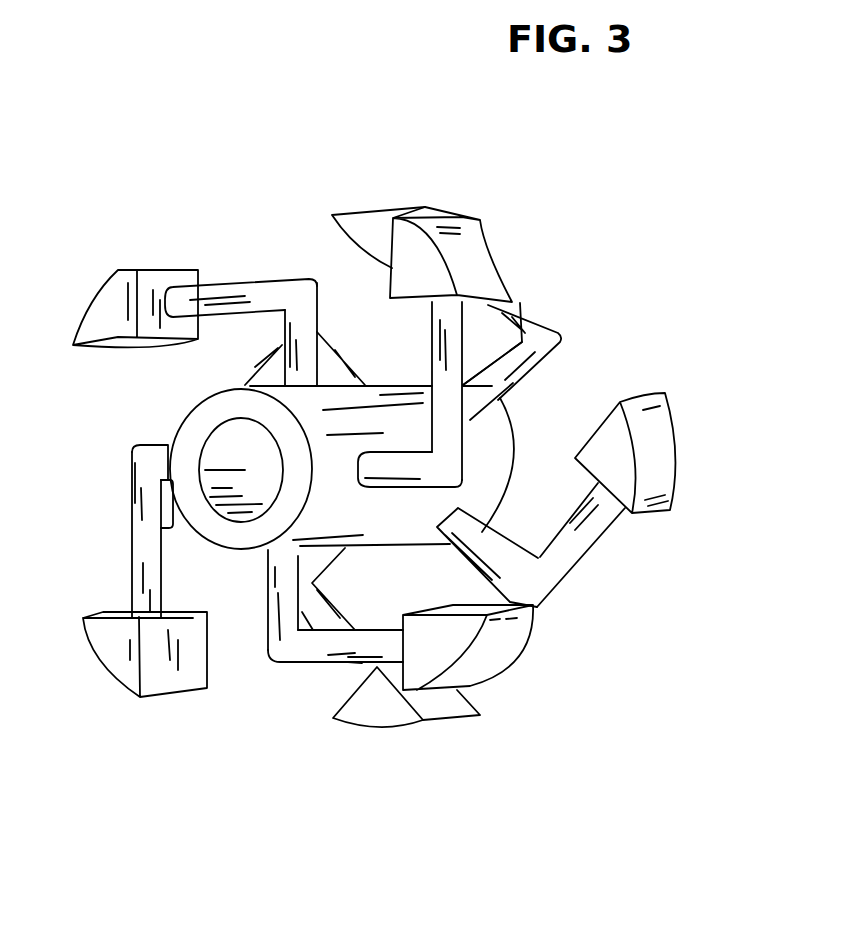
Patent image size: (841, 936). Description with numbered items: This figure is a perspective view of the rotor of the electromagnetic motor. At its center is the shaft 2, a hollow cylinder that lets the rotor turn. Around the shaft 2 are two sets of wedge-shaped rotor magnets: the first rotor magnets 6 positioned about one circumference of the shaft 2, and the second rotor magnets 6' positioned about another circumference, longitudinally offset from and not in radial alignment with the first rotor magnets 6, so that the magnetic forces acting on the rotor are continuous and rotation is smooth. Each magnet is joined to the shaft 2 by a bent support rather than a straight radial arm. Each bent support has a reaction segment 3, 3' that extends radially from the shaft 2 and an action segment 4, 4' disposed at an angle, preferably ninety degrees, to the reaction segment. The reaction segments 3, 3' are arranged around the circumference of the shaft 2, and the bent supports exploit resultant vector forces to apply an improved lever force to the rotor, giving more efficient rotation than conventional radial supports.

The shaft 2 is at (203, 416).
The reaction segment 3 is at (266, 466).
The reaction segment 3' is at (383, 481).
The action segment 4 is at (257, 470).
The action segment 4' is at (480, 437).
The first rotor magnets 6 is at (308, 478).
The second rotor magnets 6' is at (385, 461).